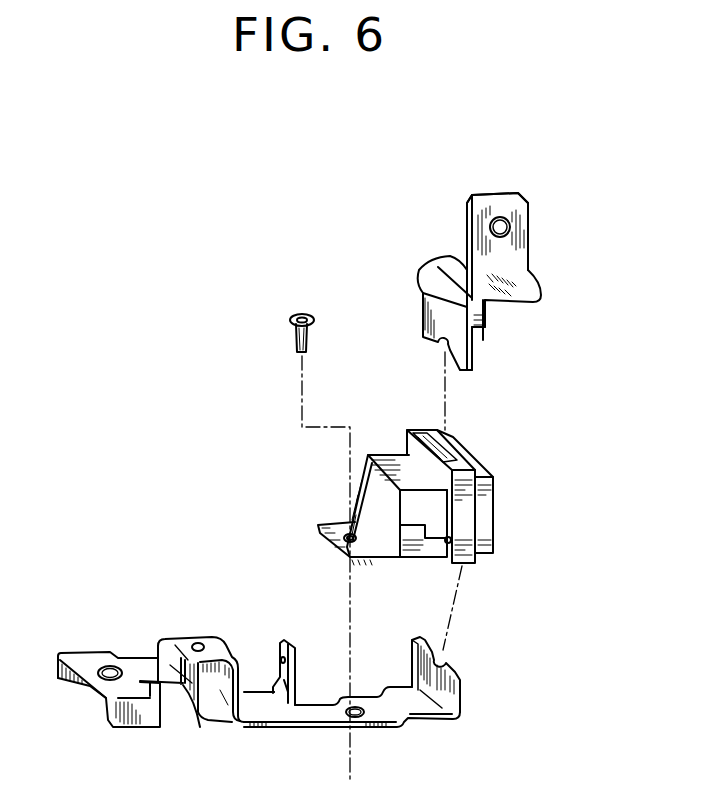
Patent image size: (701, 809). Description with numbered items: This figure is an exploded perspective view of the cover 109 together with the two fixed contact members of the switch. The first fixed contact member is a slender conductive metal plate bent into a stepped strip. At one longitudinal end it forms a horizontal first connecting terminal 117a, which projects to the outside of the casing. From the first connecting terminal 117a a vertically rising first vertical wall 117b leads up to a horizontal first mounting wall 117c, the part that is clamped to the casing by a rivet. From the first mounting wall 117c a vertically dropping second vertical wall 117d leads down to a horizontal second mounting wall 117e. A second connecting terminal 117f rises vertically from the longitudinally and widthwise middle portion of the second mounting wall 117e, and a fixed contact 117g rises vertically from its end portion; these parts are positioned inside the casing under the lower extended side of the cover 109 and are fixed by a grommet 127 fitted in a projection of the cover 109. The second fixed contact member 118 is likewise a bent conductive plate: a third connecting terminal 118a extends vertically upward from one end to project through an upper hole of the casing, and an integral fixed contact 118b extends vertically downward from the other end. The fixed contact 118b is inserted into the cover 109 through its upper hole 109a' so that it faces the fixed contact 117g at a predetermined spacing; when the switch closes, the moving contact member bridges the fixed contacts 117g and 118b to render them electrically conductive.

The cover 109 is at (494, 523).
The upper hole 109a' is at (485, 443).
The second fixed contact member 118 is at (545, 279).
The third connecting terminal 118a is at (512, 216).
The fixed contact 118b is at (458, 355).
The grommet 127 is at (312, 335).
The first connecting terminal 117a is at (108, 687).
The first vertical wall 117b is at (180, 687).
The first mounting wall 117c is at (183, 643).
The second vertical wall 117d is at (223, 718).
The second mounting wall 117e is at (330, 715).
The second connecting terminal 117f is at (278, 652).
The fixed contact 117g is at (460, 688).